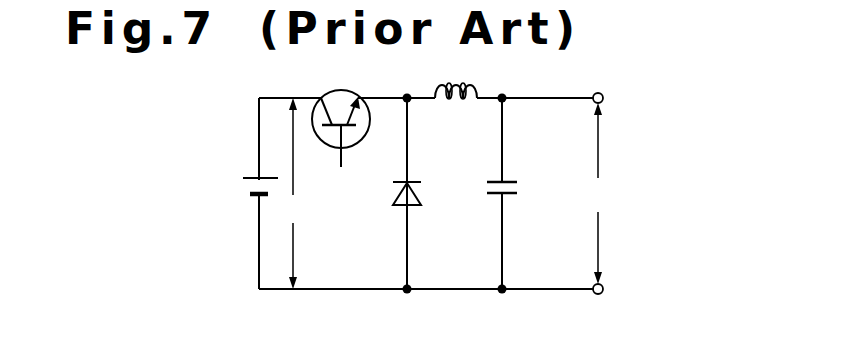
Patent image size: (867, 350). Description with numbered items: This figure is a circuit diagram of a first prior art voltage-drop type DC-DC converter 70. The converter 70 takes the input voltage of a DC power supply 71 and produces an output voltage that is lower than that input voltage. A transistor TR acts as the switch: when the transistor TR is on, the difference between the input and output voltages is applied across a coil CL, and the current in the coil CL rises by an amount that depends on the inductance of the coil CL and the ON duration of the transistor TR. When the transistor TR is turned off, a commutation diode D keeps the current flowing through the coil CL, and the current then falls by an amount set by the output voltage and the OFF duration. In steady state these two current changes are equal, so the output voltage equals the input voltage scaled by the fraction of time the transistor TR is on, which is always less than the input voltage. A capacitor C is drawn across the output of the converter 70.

The voltage-drop type DC-DC converter 70 is at (668, 87).
The DC power supply 71 is at (250, 179).
The transistor TR is at (350, 150).
The commutation diode D is at (417, 192).
The coil CL is at (447, 100).
The smoothing capacitor C is at (510, 195).